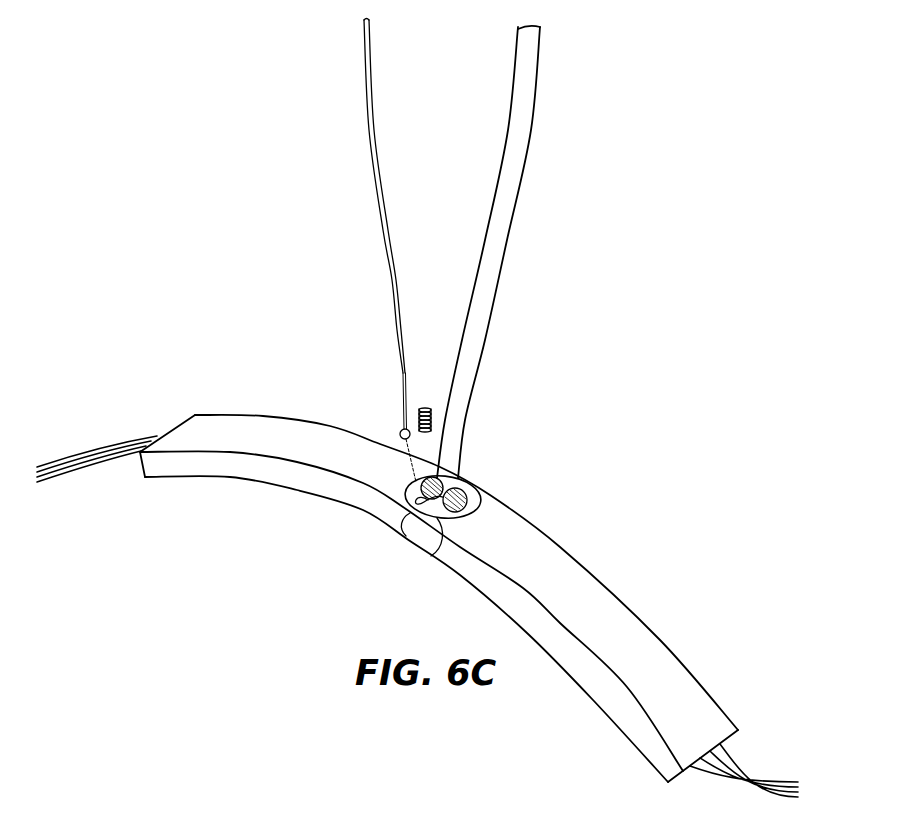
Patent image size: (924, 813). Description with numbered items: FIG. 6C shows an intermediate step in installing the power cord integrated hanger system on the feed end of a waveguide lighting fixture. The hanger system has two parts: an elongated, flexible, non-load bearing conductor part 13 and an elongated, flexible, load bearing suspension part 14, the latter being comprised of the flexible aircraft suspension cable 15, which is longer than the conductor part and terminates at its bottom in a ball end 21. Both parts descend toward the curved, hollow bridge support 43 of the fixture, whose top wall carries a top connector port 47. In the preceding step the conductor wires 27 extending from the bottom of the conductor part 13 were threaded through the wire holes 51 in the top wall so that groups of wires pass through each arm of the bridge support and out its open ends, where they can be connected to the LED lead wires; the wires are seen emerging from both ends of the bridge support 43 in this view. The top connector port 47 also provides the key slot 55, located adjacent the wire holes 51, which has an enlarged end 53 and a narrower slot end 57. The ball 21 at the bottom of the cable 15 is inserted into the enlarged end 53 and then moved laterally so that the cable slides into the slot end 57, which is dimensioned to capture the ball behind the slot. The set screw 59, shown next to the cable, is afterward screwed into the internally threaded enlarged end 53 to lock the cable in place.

The conductor part 13 is at (526, 252).
The suspension part 14 is at (355, 166).
The suspension cable 15 is at (385, 243).
The ball end 21 is at (401, 429).
The conductor wires 27 is at (474, 485).
The bridge support 43 is at (493, 575).
The top connector port 47 is at (417, 498).
The wire holes 51 is at (480, 494).
The enlarged end 53 is at (406, 531).
The key slot 55 is at (431, 556).
The slot end 57 is at (479, 509).
The set screw 59 is at (421, 407).